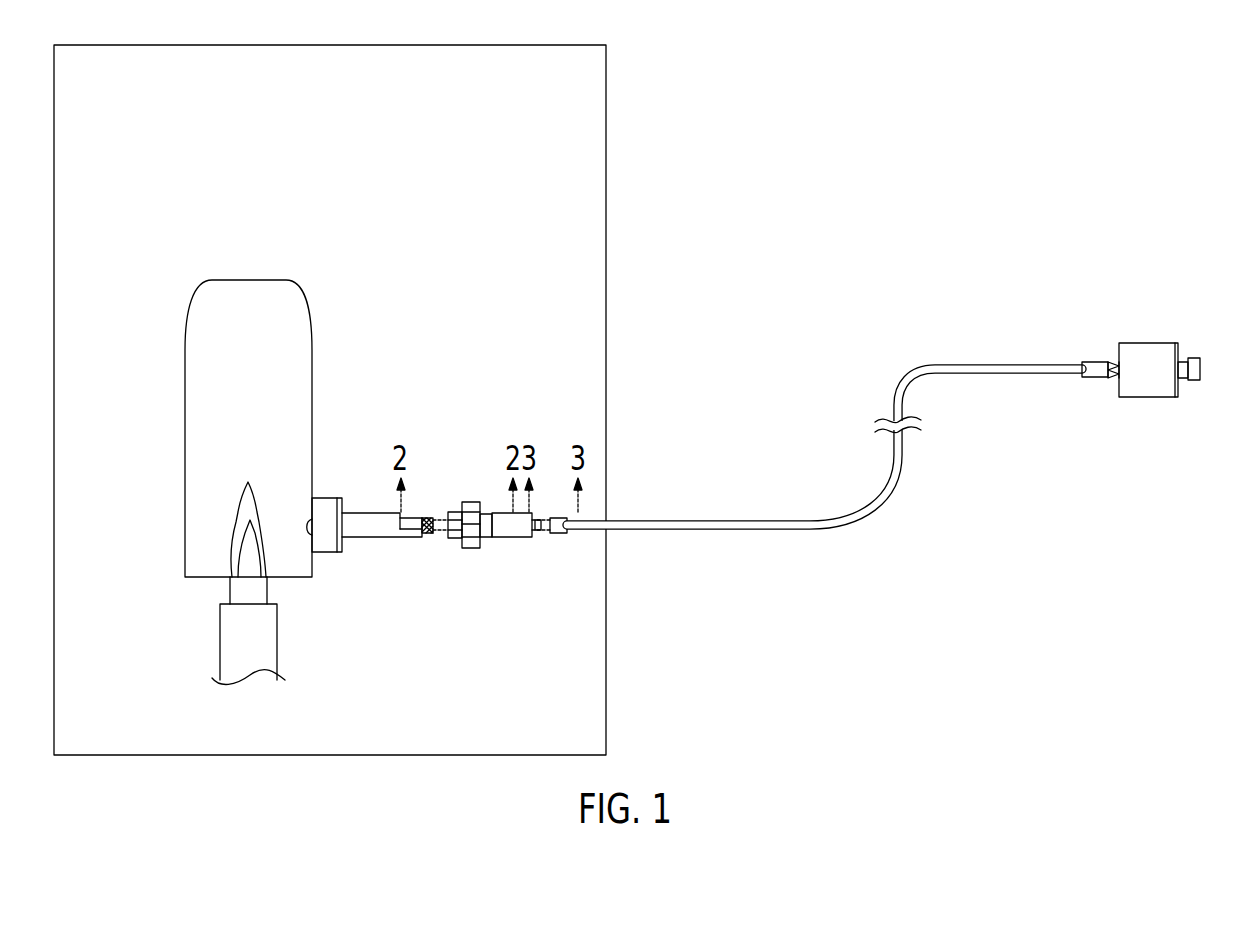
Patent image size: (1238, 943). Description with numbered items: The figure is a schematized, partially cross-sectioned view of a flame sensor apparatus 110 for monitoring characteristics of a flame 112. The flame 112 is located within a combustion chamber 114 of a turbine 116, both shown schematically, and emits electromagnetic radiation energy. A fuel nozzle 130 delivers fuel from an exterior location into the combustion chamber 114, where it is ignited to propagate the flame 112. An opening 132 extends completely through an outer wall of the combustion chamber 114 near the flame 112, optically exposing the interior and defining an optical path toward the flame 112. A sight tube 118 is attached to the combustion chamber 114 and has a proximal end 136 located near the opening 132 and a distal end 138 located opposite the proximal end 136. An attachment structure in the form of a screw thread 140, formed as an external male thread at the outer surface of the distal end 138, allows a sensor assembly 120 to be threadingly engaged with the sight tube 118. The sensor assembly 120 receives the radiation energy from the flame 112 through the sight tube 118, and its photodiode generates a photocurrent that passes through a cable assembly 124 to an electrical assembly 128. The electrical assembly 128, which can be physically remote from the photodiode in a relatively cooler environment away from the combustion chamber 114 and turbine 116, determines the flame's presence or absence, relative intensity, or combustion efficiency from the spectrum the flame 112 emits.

The flame sensor apparatus 110 is at (993, 602).
The flame 112 is at (241, 506).
The combustion chamber 114 is at (312, 388).
The turbine 116 is at (606, 265).
The sight tube 118 is at (380, 545).
The sensor assembly 120 is at (512, 540).
The cable assembly 124 is at (888, 493).
The electrical assembly 128 is at (1147, 343).
The fuel nozzle 130 is at (277, 636).
The opening 132 is at (306, 517).
The proximal end 136 is at (323, 553).
The distal end 138 is at (413, 510).
The screw thread 140 is at (425, 540).